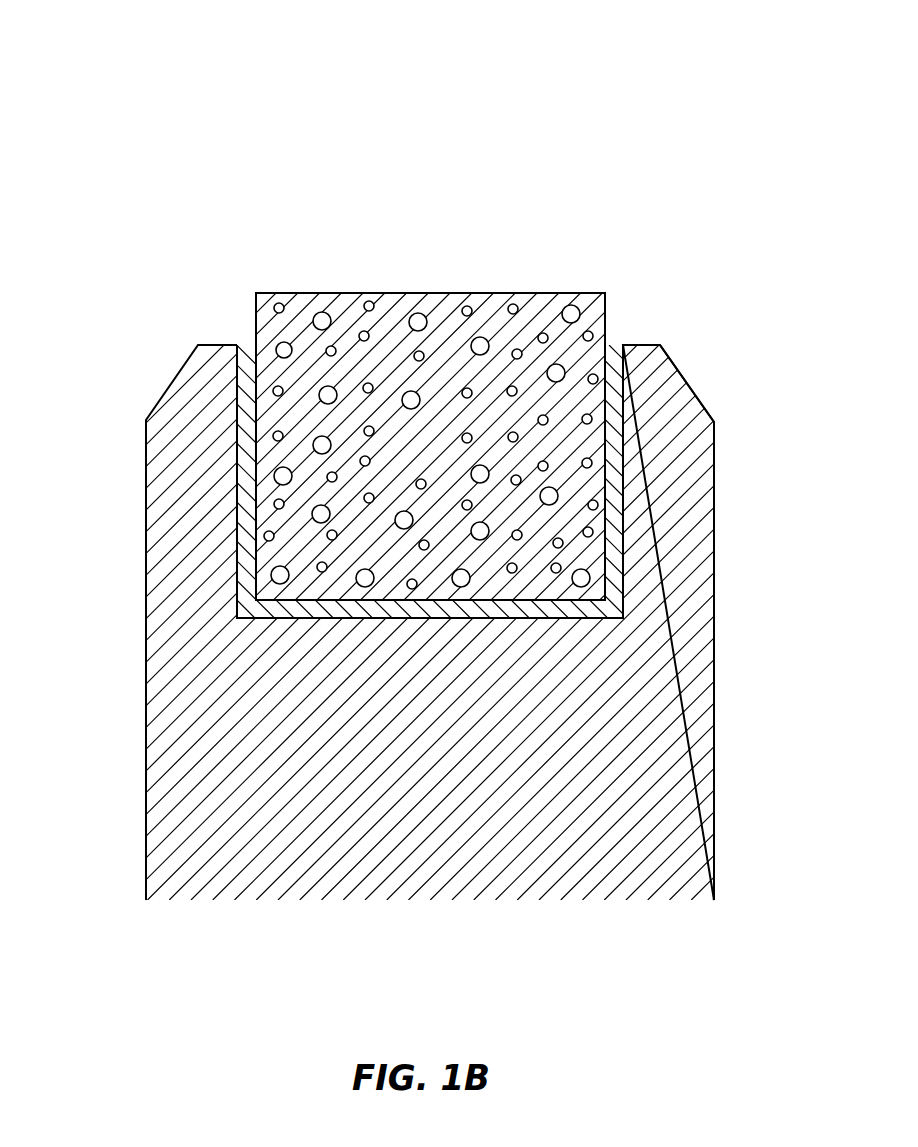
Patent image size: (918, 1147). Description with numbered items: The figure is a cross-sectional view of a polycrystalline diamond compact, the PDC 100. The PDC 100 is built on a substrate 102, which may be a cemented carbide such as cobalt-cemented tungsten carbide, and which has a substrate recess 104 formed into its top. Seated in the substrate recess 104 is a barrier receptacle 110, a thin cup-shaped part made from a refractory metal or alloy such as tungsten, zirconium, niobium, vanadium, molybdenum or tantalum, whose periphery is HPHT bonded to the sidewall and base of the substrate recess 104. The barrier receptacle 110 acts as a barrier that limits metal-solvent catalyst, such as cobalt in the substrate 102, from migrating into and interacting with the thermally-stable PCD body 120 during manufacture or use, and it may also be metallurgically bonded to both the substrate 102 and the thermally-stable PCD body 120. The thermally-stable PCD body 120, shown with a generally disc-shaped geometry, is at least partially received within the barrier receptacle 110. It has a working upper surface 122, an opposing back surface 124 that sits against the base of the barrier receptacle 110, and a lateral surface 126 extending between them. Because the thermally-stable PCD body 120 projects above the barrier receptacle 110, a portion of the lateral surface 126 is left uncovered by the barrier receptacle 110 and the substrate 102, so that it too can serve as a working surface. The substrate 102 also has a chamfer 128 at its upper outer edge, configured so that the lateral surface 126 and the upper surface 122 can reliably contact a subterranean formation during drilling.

The PDC 100 is at (672, 114).
The substrate 102 is at (455, 773).
The substrate recess 104 is at (625, 528).
The barrier receptacle 110 is at (617, 345).
The thermally-stable PCD body 120 is at (450, 461).
The working upper surface 122 is at (399, 292).
The back surface 124 is at (313, 603).
The lateral surface 126 is at (255, 310).
The chamfer 128 is at (688, 381).